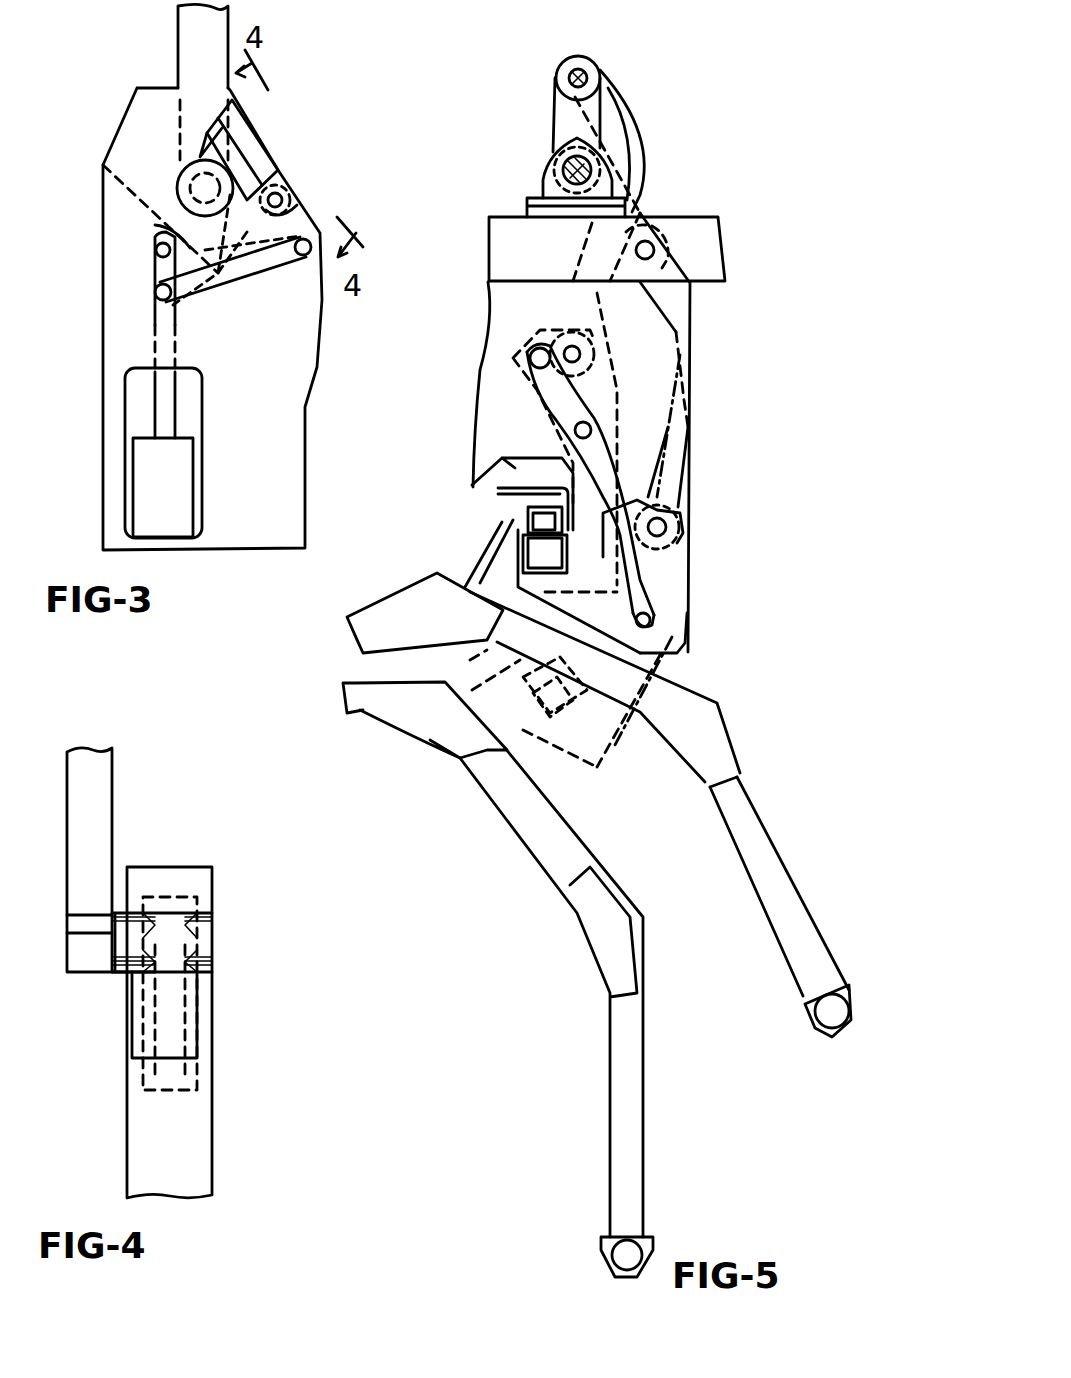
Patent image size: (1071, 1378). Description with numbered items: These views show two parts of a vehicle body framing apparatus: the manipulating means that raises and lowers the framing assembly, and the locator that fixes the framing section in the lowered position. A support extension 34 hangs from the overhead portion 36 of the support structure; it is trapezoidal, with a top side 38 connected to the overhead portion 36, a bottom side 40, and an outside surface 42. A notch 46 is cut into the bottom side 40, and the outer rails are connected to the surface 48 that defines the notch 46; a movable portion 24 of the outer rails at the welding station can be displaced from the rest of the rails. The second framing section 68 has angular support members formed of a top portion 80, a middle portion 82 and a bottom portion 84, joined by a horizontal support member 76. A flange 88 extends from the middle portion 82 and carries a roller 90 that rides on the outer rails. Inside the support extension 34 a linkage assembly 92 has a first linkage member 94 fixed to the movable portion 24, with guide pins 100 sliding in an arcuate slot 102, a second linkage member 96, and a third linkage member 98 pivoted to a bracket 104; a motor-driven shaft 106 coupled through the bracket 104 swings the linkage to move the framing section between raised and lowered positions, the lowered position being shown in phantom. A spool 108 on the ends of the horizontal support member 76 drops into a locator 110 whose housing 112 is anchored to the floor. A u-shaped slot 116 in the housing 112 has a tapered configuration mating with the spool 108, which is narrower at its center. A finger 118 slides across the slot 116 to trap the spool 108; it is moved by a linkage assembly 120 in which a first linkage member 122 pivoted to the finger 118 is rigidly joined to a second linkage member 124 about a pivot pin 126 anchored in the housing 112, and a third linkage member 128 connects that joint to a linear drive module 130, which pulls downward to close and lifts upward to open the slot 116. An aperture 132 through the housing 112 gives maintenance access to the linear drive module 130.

In FIG. 5, the movable portion of the outer rails 24 is at (542, 555).
In FIG. 5, the support extension 34 is at (692, 483).
In FIG. 5, the overhead portion 36 is at (688, 217).
In FIG. 5, the top side 38 is at (500, 272).
In FIG. 5, the bottom side 40 is at (680, 655).
In FIG. 5, the outside surface 42 is at (688, 427).
In FIG. 5, the notch 46 is at (517, 470).
In FIG. 5, the surface 48 is at (562, 510).
In FIG. 5, the second framing section 68 is at (764, 807).
In FIG. 4, the horizontal support member 76 is at (81, 959).
In FIG. 5, the top portion 80 is at (352, 638).
In FIG. 5, the middle portion 82 is at (713, 705).
In FIG. 4, the bottom portion 84 is at (104, 808).
In FIG. 5, the bottom portion 84 is at (784, 861).
In FIG. 5, the flange 88 is at (453, 563).
In FIG. 5, the roller 90 is at (545, 520).
In FIG. 5, the linkage assembly 92 is at (642, 150).
In FIG. 5, the first linkage member 94 is at (520, 377).
In FIG. 5, the second linkage member 96 is at (618, 128).
In FIG. 5, the third linkage member 98 is at (565, 118).
In FIG. 5, the guide pins 100 is at (533, 360).
In FIG. 5, the arcuate slot 102 is at (553, 390).
In FIG. 5, the bracket 104 is at (543, 192).
In FIG. 5, the shaft 106 is at (562, 160).
In FIG. 4, the spool 108 is at (207, 942).
In FIG. 3, the locator 110 is at (77, 270).
In FIG. 4, the locator 110 is at (216, 1137).
In FIG. 3, the housing 112 is at (113, 193).
In FIG. 3, the u-shaped slot 116 is at (243, 125).
In FIG. 4, the u-shaped slot 116 is at (125, 970).
In FIG. 3, the finger 118 is at (250, 153).
In FIG. 4, the finger 118 is at (197, 1010).
In FIG. 3, the linkage assembly 120 is at (222, 275).
In FIG. 3, the first linkage member 122 is at (300, 190).
In FIG. 3, the second linkage member 124 is at (102, 167).
In FIG. 3, the pivot pin 126 is at (220, 275).
In FIG. 3, the third linkage member 128 is at (157, 397).
In FIG. 3, the linear drive module 130 is at (148, 495).
In FIG. 3, the aperture 132 is at (190, 420).